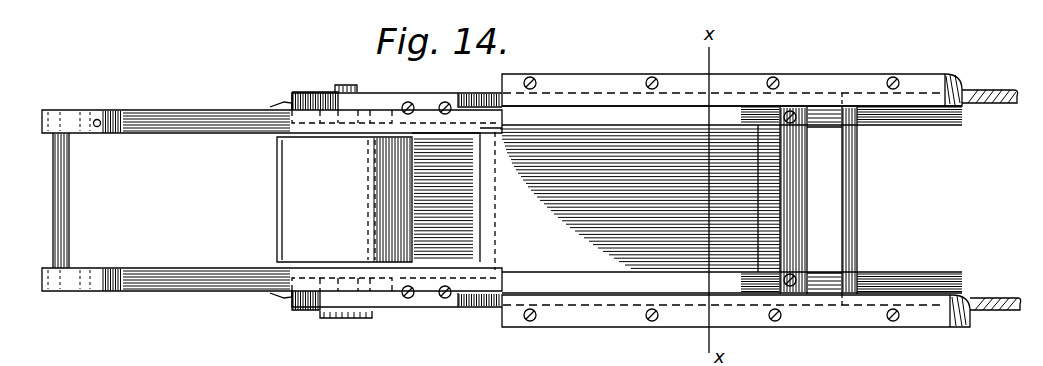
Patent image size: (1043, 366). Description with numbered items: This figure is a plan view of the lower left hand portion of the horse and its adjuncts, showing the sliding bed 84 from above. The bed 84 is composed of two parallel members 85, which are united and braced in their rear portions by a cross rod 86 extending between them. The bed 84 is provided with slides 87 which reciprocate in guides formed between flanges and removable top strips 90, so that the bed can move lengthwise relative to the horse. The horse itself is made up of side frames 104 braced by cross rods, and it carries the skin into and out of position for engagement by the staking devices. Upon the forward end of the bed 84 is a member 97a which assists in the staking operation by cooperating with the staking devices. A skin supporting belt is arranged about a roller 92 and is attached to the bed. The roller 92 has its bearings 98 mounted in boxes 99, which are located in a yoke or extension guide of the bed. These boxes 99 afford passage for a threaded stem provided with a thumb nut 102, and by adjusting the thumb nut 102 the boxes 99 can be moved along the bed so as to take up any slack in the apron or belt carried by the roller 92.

The sliding bed 84 is at (272, 185).
The members 85 is at (222, 118).
The cross rod 86 is at (58, 212).
The slides 87 is at (490, 95).
The removable top strips 90 is at (606, 84).
The roller 92 is at (528, 198).
The member 97a is at (792, 197).
The bearings 98 is at (342, 87).
The boxes 99 is at (322, 91).
The thumb nut 102 is at (283, 105).
The side frames 104 is at (983, 200).